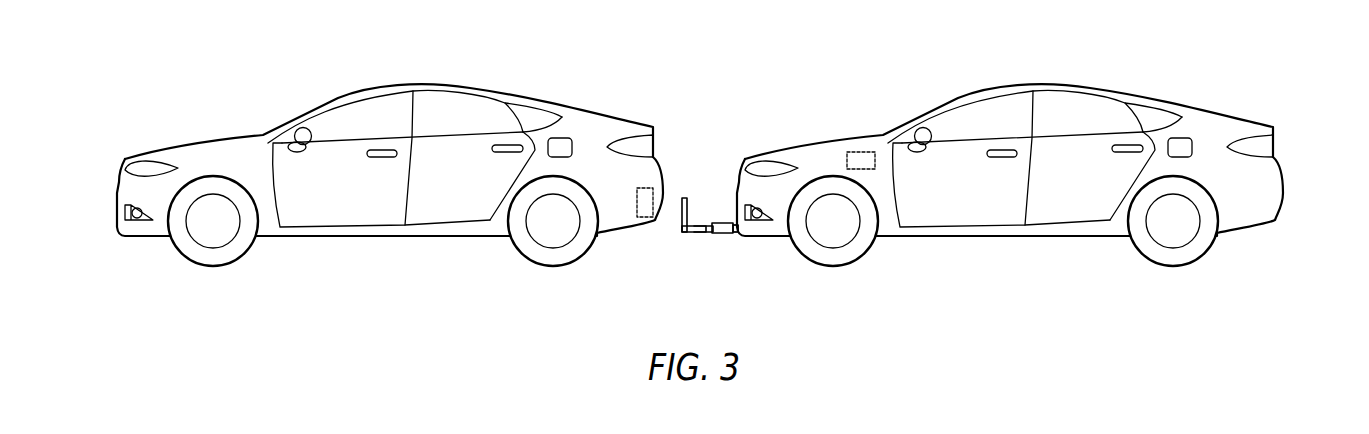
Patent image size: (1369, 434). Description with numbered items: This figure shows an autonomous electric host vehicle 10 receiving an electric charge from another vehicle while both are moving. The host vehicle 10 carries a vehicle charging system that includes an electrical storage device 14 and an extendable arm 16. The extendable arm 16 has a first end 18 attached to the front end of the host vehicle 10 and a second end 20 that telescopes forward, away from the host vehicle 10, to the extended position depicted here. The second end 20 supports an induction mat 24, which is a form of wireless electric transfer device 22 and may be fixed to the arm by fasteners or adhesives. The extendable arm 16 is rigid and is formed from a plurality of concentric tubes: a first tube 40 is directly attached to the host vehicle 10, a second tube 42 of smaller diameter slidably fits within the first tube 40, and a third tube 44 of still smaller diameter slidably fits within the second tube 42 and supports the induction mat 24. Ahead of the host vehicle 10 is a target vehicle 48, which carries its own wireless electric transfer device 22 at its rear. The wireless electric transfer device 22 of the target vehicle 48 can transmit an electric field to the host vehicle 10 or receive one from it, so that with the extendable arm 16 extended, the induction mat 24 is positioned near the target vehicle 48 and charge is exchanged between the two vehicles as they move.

The host vehicle 10 is at (1158, 72).
The electrical storage device 14 is at (857, 152).
The extendable arm 16 is at (718, 236).
The first end 18 is at (733, 234).
The second end 20 is at (682, 236).
The wireless electric transfer device 22 is at (641, 188).
The induction mat 24 is at (682, 203).
The first tube 40 is at (735, 224).
The second tube 42 is at (717, 226).
The third tube 44 is at (700, 225).
The target vehicle 48 is at (529, 70).